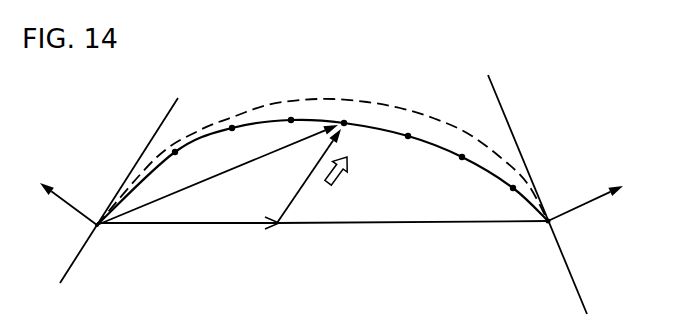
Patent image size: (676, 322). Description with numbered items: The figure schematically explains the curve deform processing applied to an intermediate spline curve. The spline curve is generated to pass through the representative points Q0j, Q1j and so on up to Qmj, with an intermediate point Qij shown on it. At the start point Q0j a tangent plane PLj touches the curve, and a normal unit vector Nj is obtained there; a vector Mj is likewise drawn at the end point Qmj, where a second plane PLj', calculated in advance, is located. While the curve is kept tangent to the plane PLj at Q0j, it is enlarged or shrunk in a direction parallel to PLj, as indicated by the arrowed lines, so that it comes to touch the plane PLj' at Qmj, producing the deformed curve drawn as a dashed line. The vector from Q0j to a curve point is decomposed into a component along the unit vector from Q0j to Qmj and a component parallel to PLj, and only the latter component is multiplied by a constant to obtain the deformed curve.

The tangent plane PLj is at (119, 185).
The plane calculated in advance PLj' is at (537, 194).
The normal unit vector Nj is at (63, 197).
The vector Mj is at (616, 188).
The start point of spline curve Cj Q0j is at (98, 228).
The representative point Q1j is at (176, 156).
The representative point Qij is at (347, 126).
The end point of spline curve Cj Qmj is at (546, 225).